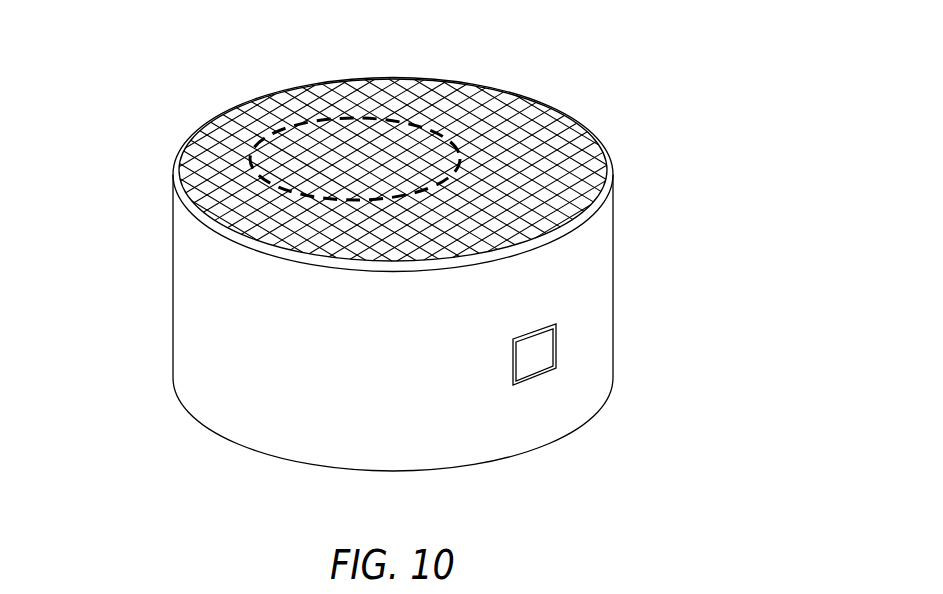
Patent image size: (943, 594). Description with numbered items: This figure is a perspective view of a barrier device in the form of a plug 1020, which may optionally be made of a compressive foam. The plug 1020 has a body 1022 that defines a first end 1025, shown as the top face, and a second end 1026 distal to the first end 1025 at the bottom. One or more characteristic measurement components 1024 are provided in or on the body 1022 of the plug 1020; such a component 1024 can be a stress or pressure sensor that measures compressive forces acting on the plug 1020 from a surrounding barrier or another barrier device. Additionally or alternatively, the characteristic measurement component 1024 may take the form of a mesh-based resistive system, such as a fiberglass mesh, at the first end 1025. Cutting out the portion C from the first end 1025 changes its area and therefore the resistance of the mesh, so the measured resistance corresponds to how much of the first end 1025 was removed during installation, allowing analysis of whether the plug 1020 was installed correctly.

The plug 1020 is at (408, 247).
The body 1022 is at (187, 283).
The characteristic measurement component 1024 is at (523, 113).
The first end 1025 is at (190, 130).
The second end 1026 is at (210, 428).
The cut-out portion C is at (300, 120).